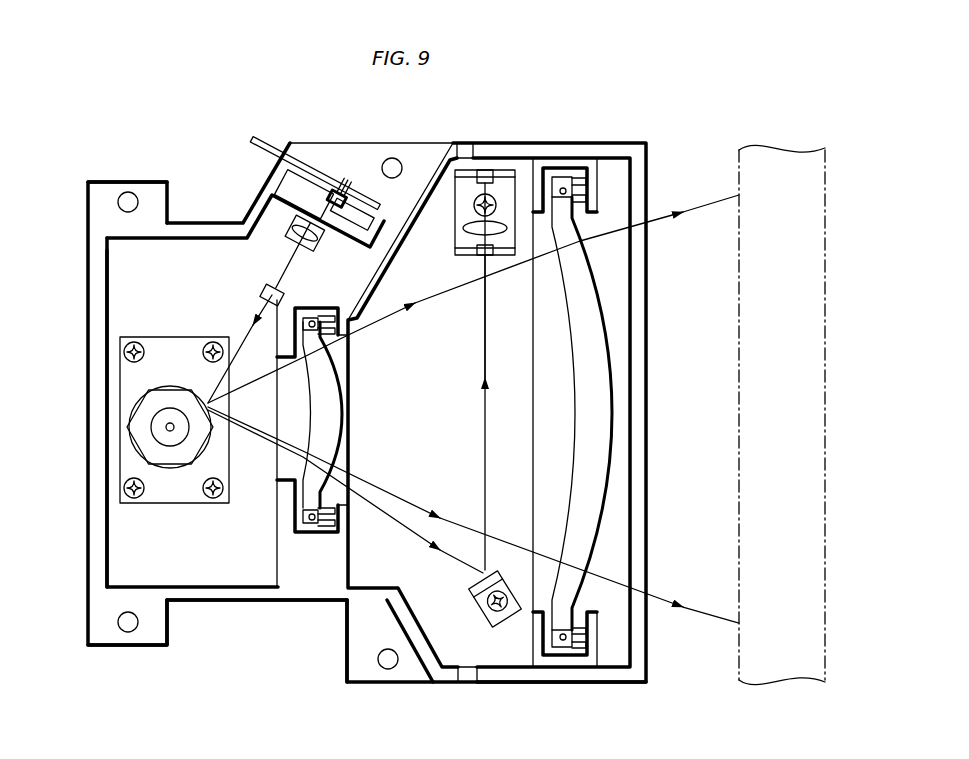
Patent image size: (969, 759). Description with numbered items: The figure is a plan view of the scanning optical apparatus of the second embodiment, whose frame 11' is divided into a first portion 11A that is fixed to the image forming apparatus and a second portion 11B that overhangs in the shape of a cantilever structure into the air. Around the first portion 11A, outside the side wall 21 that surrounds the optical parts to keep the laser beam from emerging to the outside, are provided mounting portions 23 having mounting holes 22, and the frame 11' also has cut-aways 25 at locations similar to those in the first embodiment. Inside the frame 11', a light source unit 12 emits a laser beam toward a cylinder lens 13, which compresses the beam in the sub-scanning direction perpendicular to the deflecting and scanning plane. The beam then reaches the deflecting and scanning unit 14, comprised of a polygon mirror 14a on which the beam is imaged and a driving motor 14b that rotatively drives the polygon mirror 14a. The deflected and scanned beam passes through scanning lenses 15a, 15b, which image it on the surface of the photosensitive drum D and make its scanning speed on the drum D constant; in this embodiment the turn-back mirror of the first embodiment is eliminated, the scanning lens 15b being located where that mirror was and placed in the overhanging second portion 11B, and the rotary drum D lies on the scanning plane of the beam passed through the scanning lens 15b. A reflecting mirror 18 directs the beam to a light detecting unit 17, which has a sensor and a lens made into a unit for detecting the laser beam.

The frame 11' is at (338, 412).
The first portion 11A is at (313, 603).
The second portion 11B is at (564, 683).
The light source unit 12 is at (325, 160).
The cylinder lens 13 is at (260, 293).
The deflecting and scanning unit 14 is at (181, 505).
The polygon mirror 14a is at (147, 406).
The driving motor 14b is at (133, 463).
The scanning lens 15a is at (330, 455).
The scanning lens 15b is at (578, 408).
The light detecting unit 17 is at (500, 170).
The reflecting mirror 18 is at (468, 591).
The side wall 21 is at (96, 528).
The mounting holes 22 is at (128, 196).
The mounting portions 23 is at (101, 186).
The cut-aways 25 is at (467, 143).
The photosensitive drum D is at (739, 662).